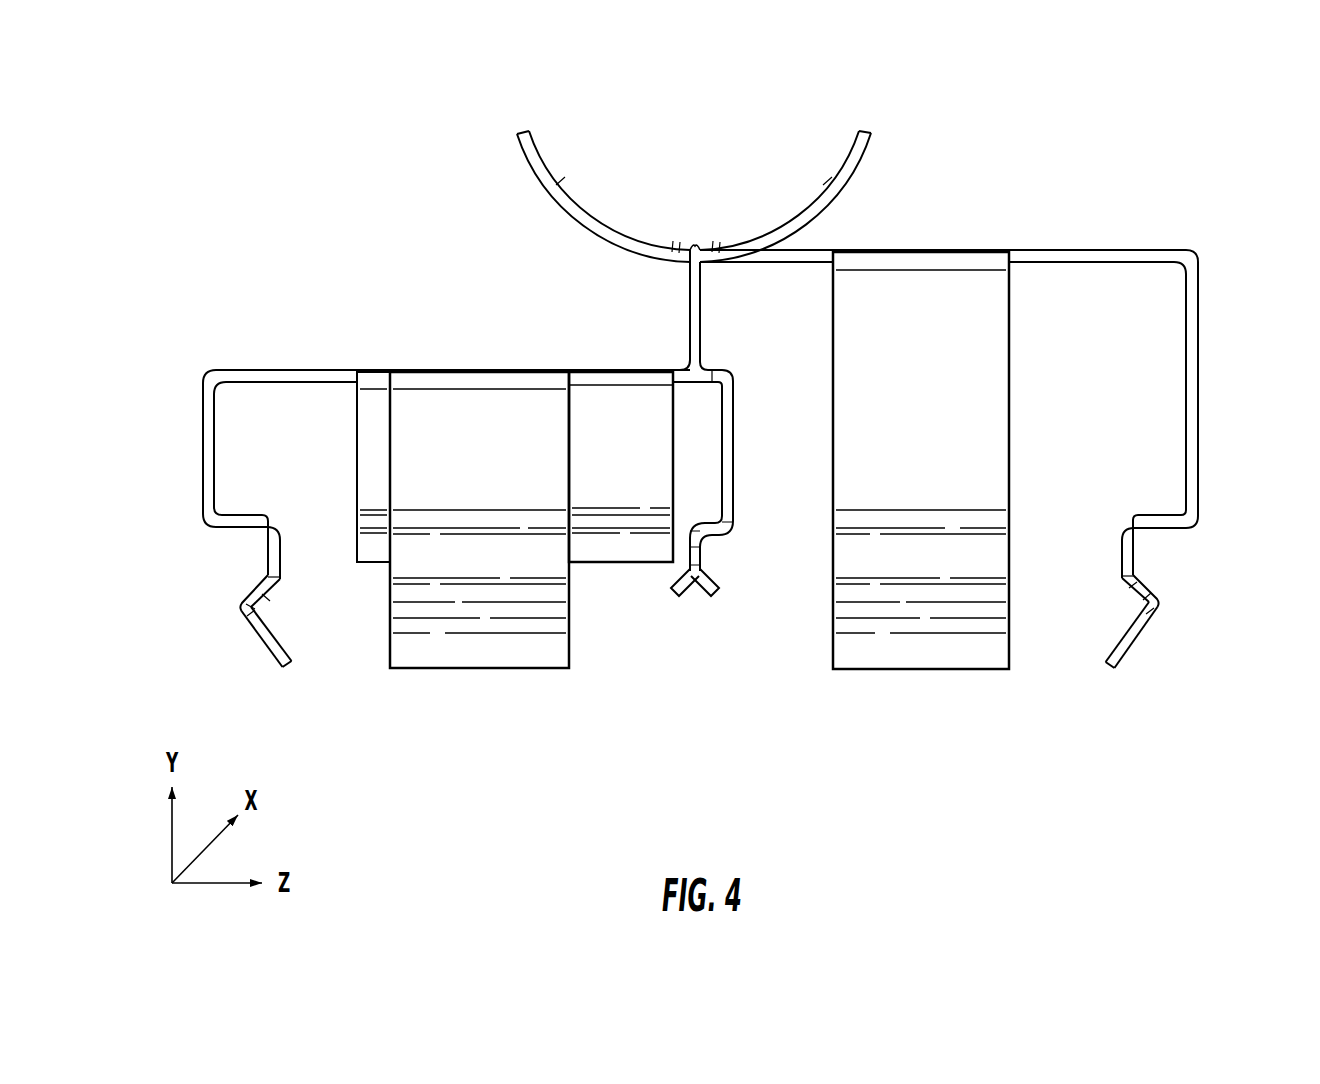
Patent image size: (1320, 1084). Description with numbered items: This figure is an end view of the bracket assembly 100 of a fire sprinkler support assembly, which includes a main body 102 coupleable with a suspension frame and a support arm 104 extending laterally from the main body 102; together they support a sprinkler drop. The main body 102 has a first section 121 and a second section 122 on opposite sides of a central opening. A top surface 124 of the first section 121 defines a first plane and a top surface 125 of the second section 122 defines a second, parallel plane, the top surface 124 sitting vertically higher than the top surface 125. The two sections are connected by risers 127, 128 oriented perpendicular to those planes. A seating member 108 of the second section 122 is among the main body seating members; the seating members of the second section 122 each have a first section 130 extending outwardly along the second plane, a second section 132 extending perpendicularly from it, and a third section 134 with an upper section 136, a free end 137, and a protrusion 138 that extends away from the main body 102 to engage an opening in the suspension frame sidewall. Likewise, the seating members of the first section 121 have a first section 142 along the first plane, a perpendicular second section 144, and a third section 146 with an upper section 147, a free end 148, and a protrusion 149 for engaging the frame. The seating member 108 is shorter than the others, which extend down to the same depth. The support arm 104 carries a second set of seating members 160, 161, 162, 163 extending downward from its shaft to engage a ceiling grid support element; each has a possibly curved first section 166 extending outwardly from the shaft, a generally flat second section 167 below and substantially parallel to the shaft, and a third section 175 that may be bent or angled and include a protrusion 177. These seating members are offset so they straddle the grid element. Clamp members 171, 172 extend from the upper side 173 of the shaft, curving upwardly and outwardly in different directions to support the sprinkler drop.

The bracket assembly 100 is at (701, 431).
The main body 102 is at (989, 459).
The support arm 104 is at (696, 185).
The seating member 108 is at (610, 442).
The first section 121 is at (980, 460).
The second section 122 is at (421, 511).
The top surface 124 is at (809, 224).
The top surface 125 is at (467, 343).
The riser 127 is at (599, 298).
The riser 128 is at (599, 298).
The first section 130 is at (320, 351).
The second section 132 is at (331, 437).
The third section 134 is at (411, 564).
The upper section 136 is at (412, 568).
The free end 137 is at (406, 670).
The protrusion 138 is at (319, 650).
The first section 142 is at (1015, 231).
The second section 144 is at (1129, 389).
The third section 146 is at (921, 503).
The upper section 147 is at (1101, 544).
The free end 148 is at (1079, 664).
The protrusion 149 is at (1003, 582).
The seating member 160 is at (702, 648).
The seating member 161 is at (768, 557).
The seating member 162 is at (702, 648).
The seating member 163 is at (768, 557).
The first section 166 is at (743, 352).
The second section 167 is at (768, 450).
The clamp member 171 is at (564, 196).
The clamp member 172 is at (826, 185).
The upper side 173 is at (723, 214).
The third section 175 is at (718, 632).
The protrusion 177 is at (720, 559).